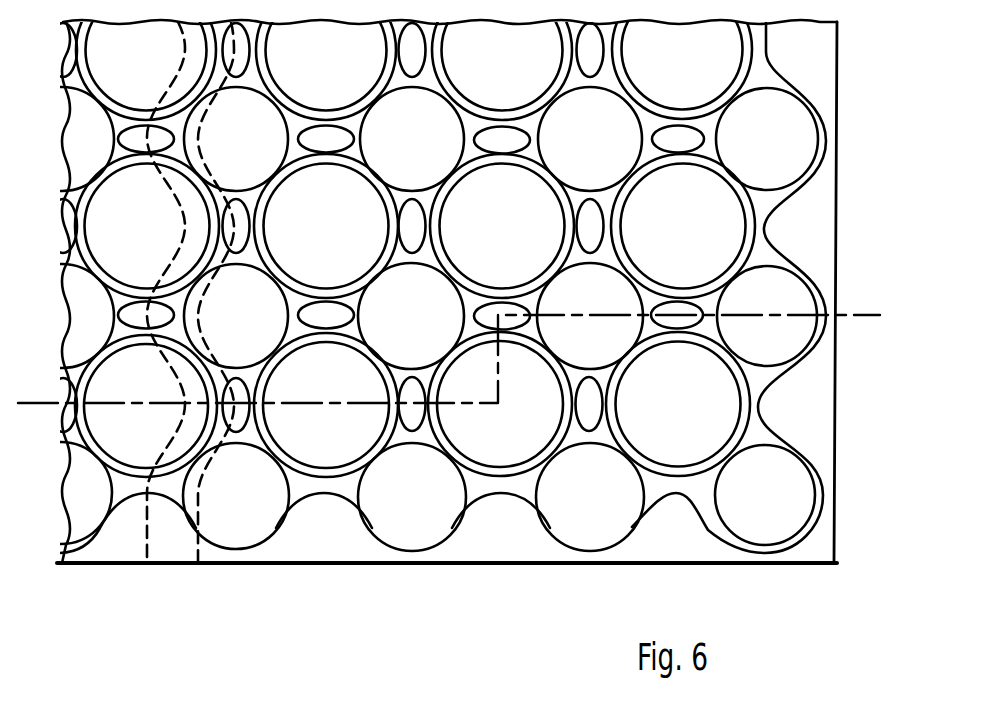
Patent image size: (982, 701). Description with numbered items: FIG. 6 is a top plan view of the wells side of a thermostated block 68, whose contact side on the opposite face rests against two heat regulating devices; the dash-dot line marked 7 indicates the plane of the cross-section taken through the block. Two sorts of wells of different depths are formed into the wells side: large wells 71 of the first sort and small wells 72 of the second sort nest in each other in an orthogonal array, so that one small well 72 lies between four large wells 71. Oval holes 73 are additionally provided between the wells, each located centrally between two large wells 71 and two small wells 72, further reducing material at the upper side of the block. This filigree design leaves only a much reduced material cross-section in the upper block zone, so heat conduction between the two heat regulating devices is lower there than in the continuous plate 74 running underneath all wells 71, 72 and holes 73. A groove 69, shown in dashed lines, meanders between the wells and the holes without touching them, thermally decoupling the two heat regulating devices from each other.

The thermostated block 68 is at (840, 432).
The groove 69 is at (166, 97).
The wells of the first sort 71 is at (133, 248).
The wells of the second sort 72 is at (245, 517).
The oval holes 73 is at (141, 150).
The continuous plate 74 is at (327, 545).
The section line 7- 7 is at (27, 410).